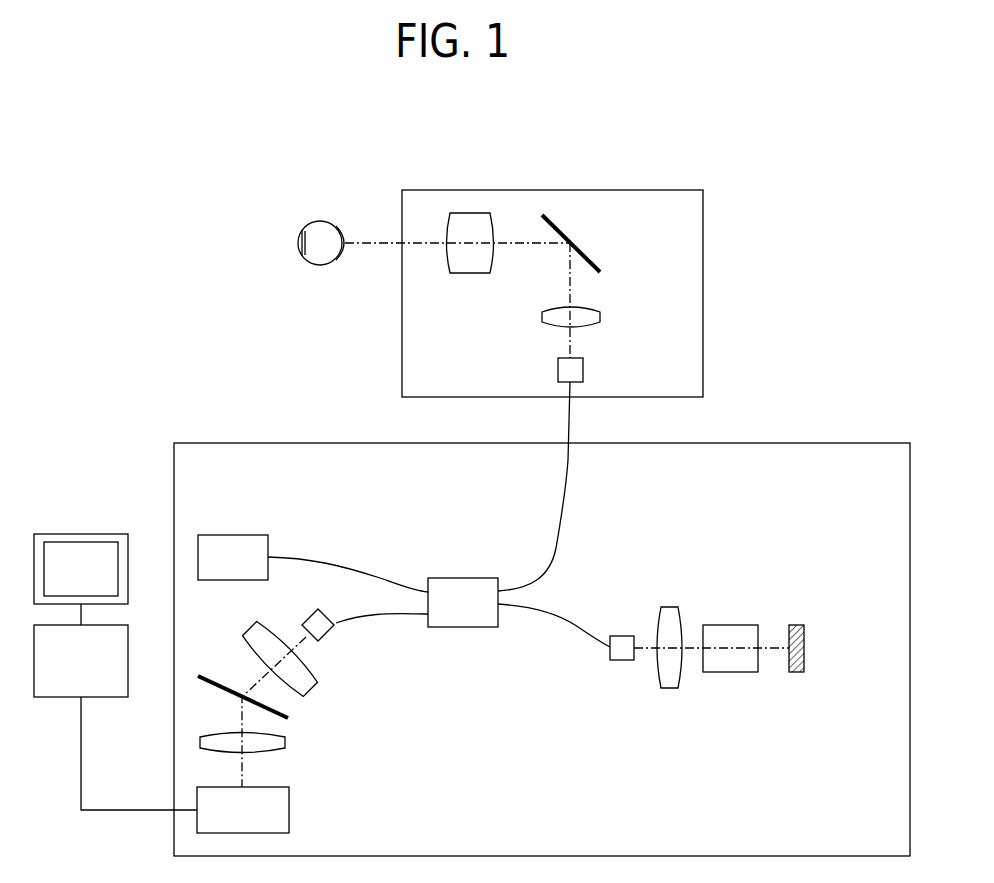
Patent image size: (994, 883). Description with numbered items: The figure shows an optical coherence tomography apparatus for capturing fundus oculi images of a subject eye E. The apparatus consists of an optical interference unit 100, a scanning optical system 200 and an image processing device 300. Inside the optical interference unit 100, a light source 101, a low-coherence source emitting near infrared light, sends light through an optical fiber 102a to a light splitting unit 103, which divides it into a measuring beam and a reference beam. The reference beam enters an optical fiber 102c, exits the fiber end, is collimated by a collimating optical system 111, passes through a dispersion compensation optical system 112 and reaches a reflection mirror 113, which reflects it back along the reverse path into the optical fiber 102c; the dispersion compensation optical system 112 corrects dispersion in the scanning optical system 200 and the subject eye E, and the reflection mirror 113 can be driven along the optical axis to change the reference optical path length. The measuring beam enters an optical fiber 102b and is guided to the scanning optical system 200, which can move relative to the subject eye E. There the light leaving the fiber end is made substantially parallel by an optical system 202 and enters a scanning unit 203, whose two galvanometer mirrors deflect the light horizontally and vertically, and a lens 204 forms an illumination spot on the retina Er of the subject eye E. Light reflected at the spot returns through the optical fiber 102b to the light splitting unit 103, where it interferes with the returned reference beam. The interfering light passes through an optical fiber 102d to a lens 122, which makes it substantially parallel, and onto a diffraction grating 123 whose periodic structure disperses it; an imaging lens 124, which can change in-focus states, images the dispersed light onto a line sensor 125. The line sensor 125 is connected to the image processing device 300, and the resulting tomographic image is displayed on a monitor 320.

The optical interference unit 100 is at (832, 443).
The light source 101 is at (232, 535).
The optical fiber 102a is at (325, 566).
The optical fiber 102b is at (569, 495).
The optical fiber 102c is at (561, 617).
The optical fiber 102d is at (368, 620).
The light splitting unit 103 is at (455, 578).
The collimating optical system 111 is at (665, 607).
The dispersion compensation optical system 112 is at (730, 672).
The reflection mirror 113 is at (793, 625).
The lens 122 is at (312, 700).
The diffraction grating 123 is at (215, 683).
The imaging lens 124 is at (288, 742).
The line sensor 125 is at (289, 810).
The scanning optical system 200 is at (703, 225).
The optical system 202 is at (600, 315).
The scanning unit 203 is at (615, 238).
The lens 204 is at (472, 275).
The image processing device 300 is at (112, 697).
The monitor 320 is at (83, 534).
The subject eye E is at (332, 222).
The retina Er is at (300, 250).